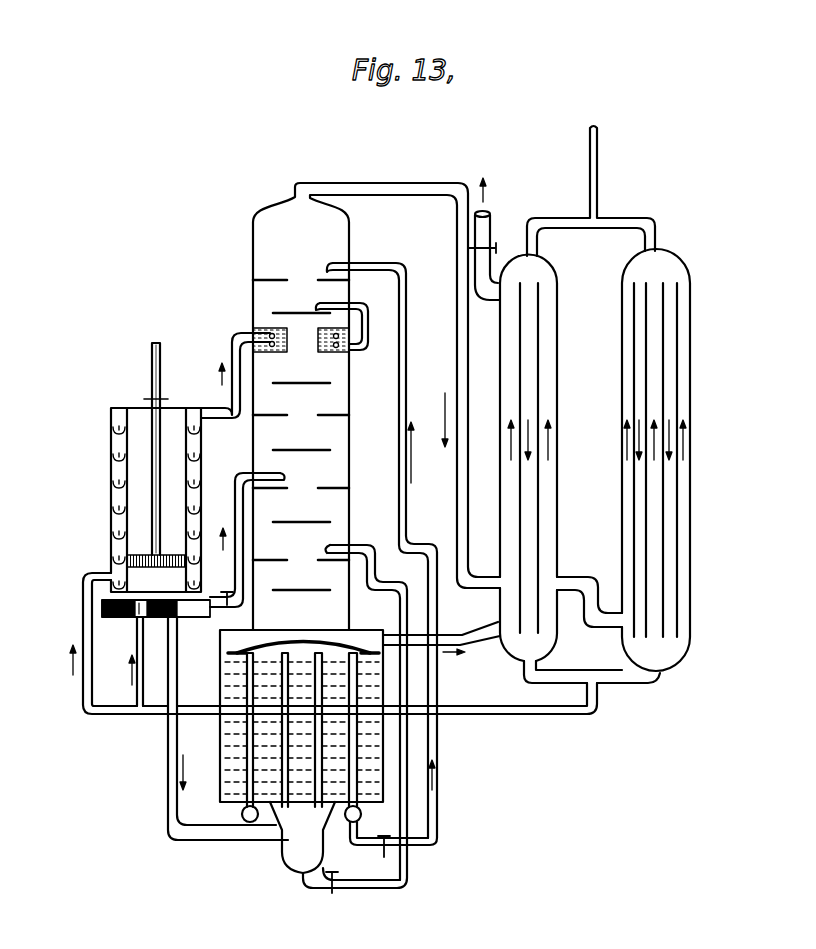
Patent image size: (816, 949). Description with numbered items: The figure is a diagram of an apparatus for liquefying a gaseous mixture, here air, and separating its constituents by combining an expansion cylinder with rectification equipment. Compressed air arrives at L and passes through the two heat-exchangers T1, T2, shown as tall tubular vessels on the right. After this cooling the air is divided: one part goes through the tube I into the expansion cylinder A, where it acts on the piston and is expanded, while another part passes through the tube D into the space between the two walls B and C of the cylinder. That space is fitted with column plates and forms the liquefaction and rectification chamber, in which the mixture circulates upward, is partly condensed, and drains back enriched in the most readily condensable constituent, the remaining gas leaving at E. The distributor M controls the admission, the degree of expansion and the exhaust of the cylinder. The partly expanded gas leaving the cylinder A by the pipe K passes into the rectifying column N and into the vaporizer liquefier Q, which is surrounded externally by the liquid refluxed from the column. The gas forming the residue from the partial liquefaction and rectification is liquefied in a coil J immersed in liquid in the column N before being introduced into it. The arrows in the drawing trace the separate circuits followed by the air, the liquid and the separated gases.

The expansion cylinder A is at (141, 502).
The wall B is at (110, 447).
The wall C is at (110, 482).
The tube D is at (85, 610).
The outlet E is at (208, 412).
The tube I is at (140, 646).
The coil J is at (250, 334).
The pipe K is at (177, 675).
The compressed air inlet L is at (597, 186).
The distributor M is at (114, 619).
The rectifying column N is at (335, 442).
The vaporizer liquefier Q is at (283, 742).
The heat-exchanger T1 is at (557, 398).
The heat-exchanger T2 is at (690, 388).